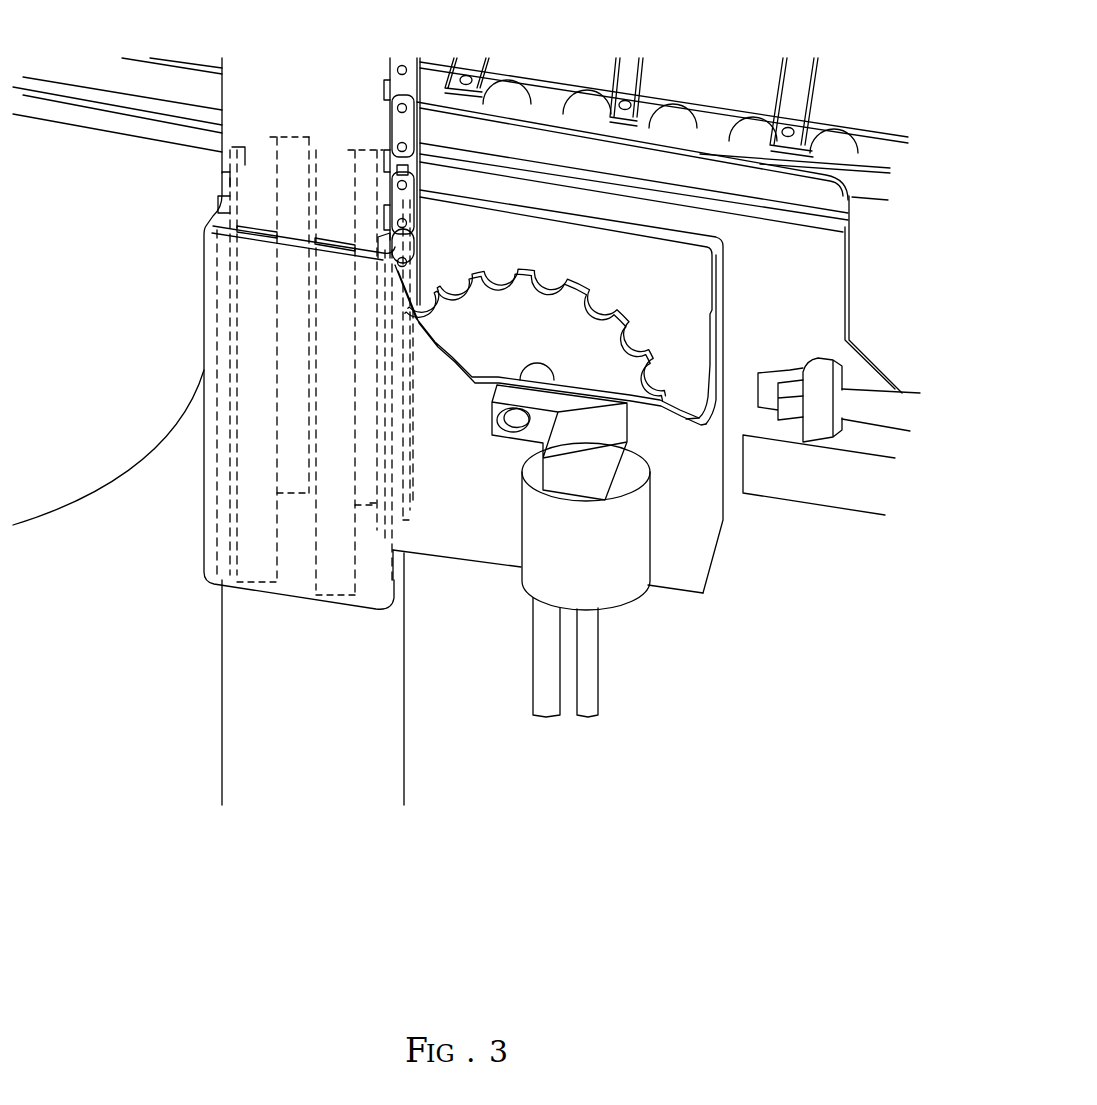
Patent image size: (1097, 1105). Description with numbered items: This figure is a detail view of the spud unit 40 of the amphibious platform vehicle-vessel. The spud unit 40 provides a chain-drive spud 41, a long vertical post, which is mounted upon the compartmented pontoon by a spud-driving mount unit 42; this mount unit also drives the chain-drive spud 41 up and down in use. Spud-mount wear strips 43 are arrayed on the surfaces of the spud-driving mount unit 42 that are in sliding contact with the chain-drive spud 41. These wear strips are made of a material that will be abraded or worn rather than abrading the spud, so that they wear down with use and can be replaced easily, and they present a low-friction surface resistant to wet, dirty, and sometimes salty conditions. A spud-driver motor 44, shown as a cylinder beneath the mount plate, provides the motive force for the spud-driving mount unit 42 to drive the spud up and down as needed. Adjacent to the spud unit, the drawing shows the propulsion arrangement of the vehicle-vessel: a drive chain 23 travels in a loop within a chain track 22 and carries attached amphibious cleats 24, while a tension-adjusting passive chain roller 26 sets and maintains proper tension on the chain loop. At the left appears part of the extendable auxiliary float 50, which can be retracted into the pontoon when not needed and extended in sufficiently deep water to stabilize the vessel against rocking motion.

The chain track 22 is at (575, 160).
The drive chain 23 is at (703, 113).
The amphibious cleat 24 is at (778, 82).
The tension-adjusting passive chain roller 26 is at (857, 415).
The spud unit 40 is at (253, 845).
The chain-drive spud 41 is at (235, 707).
The spud-driving mount unit 42 is at (465, 538).
The spud-mount wear strip 43 is at (295, 132).
The spud-driver motor 44 is at (622, 585).
The extendable auxiliary float 50 is at (61, 268).